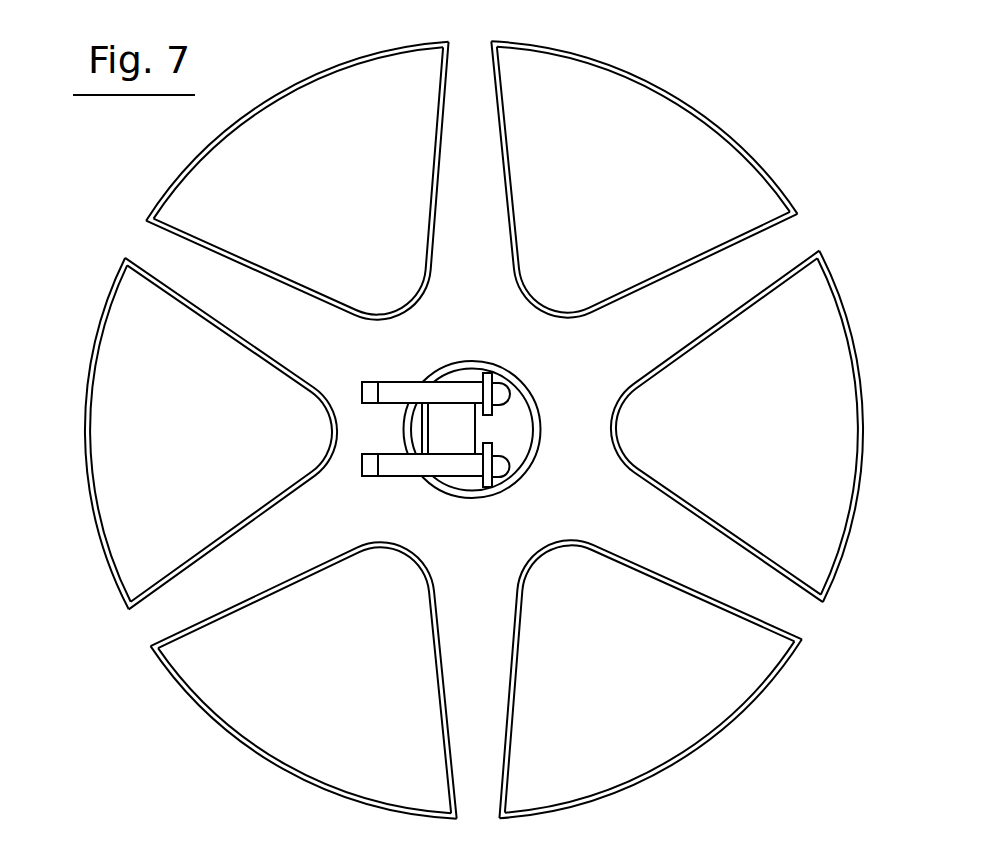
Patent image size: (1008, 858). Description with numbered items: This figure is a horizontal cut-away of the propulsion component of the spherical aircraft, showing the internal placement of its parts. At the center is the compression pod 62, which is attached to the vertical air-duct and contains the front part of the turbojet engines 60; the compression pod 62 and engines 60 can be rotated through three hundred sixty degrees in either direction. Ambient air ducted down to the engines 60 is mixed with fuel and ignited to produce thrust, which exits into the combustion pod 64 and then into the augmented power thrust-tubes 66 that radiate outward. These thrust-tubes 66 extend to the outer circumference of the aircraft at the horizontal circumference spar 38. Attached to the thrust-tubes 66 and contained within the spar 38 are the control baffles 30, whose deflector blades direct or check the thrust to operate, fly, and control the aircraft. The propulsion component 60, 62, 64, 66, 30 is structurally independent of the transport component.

The control baffle 30 is at (812, 232).
The horizontal circumference spar 38 is at (183, 160).
The augmented power thrust-tube 66 is at (238, 310).
The combustion pod 64 is at (448, 327).
The engine 60 is at (502, 388).
The compression pod 62 is at (502, 422).